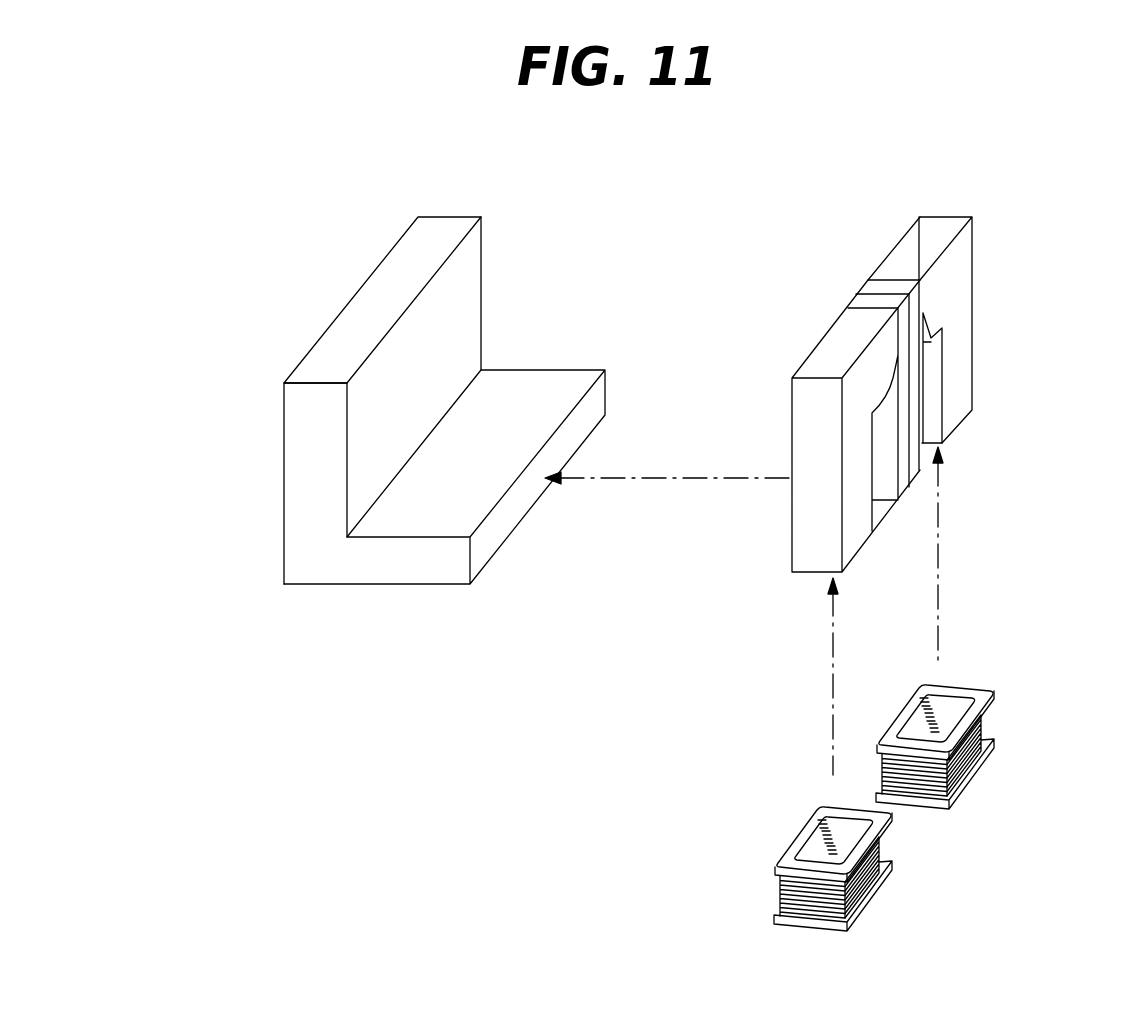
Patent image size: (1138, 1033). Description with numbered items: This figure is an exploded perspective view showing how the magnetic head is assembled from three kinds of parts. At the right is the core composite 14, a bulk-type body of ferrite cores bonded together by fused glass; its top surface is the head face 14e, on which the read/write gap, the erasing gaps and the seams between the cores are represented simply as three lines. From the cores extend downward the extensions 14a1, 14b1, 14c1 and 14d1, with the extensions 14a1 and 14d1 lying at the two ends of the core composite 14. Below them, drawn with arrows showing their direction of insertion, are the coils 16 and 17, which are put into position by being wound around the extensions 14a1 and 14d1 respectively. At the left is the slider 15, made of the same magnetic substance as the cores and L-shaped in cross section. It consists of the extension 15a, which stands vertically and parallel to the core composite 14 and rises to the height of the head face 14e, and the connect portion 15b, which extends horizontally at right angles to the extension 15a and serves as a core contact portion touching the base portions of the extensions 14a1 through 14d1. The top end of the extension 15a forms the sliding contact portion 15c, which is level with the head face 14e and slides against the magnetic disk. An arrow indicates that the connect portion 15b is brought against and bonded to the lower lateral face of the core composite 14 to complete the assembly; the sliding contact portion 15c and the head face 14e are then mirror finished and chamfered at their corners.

The core composite 14 is at (882, 382).
The extension 14a1 is at (813, 568).
The extension 14b1 is at (890, 488).
The extension 14c1 is at (915, 473).
The extension 14d1 is at (960, 400).
The head face 14e is at (914, 245).
The slider 15 is at (387, 423).
The extension 15a is at (305, 457).
The connect portion 15b is at (397, 568).
The sliding contact portion 15c is at (371, 289).
The coil 16 is at (893, 870).
The coil 17 is at (993, 750).